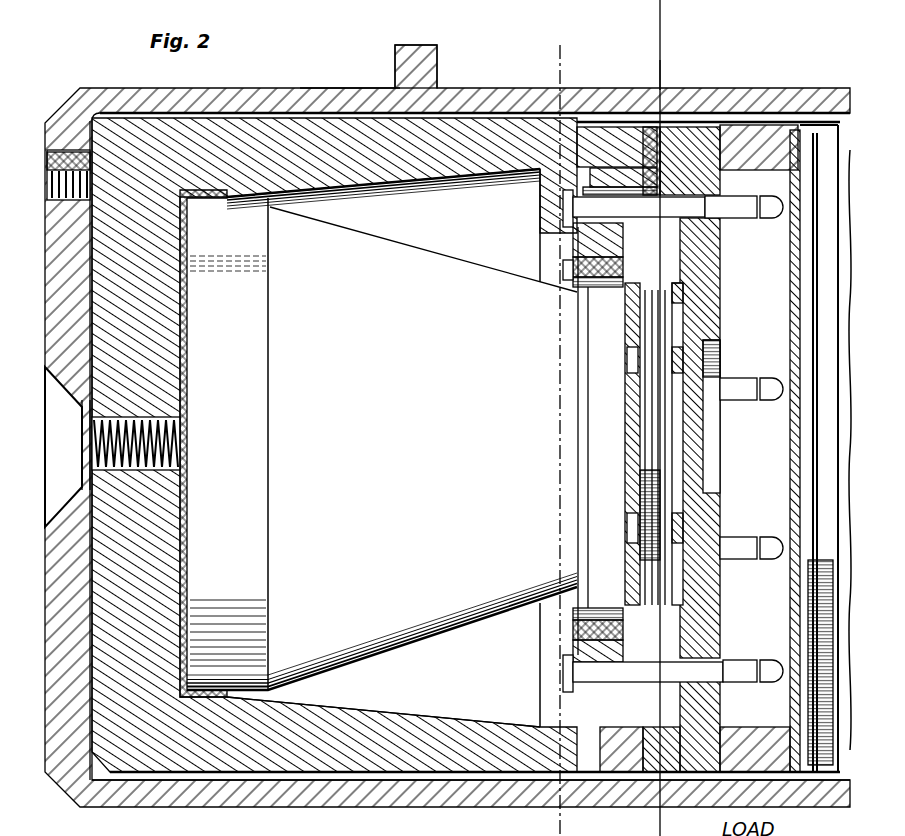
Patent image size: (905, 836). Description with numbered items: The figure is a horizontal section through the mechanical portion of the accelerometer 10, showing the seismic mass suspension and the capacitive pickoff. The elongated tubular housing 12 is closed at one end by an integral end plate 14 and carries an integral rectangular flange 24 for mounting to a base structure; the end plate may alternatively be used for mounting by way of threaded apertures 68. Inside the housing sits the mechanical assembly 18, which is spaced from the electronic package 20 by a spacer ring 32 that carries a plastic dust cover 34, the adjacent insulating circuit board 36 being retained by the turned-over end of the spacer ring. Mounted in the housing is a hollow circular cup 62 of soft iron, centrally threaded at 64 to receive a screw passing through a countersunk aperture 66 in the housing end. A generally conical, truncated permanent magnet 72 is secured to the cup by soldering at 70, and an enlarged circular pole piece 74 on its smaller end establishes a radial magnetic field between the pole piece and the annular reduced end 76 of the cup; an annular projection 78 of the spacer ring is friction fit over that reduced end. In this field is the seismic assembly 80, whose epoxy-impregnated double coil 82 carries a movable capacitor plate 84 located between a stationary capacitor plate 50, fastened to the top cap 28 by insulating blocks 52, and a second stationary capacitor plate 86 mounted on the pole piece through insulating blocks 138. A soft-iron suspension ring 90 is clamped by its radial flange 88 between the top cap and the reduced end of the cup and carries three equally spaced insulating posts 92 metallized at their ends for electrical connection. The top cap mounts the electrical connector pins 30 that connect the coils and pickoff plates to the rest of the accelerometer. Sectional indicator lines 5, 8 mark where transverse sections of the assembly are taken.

The tubular housing 12 is at (280, 104).
The end plate 14 is at (447, 426).
The mechanical assembly 18 is at (343, 86).
The electronic package 20 is at (842, 342).
The rectangular flange 24 is at (440, 68).
The top cap 28 is at (712, 289).
The electrical connector pins 30 is at (742, 206).
The spacer ring 32 is at (760, 137).
The dust cover 34 is at (790, 455).
The insulating circuit board 36 is at (816, 318).
The stationary capacitor plate 50 is at (665, 464).
The insulating blocks 52 is at (680, 508).
The hollow circular cup 62 is at (207, 130).
The central threads 64 is at (145, 430).
The countersunk aperture 66 is at (77, 465).
The threaded apertures 68 is at (46, 158).
The solder joint 70 is at (186, 350).
The permanent magnet 72 is at (376, 449).
The pole piece 74 is at (618, 405).
The annular reduced end 76 is at (600, 134).
The annular projection 78 is at (697, 130).
The seismic assembly 80 is at (556, 268).
The double coil 82 is at (572, 630).
The movable capacitor plate 84 is at (653, 423).
The second stationary capacitor plate 86 is at (642, 314).
The radial flange 88 is at (650, 755).
The suspension ring 90 is at (572, 658).
The posts 92 is at (563, 207).
The insulating blocks 138 is at (628, 360).
The section line 5- 5 is at (684, 73).
The section line 8- 8 is at (630, 31).
The accelerometer 10 is at (592, 55).